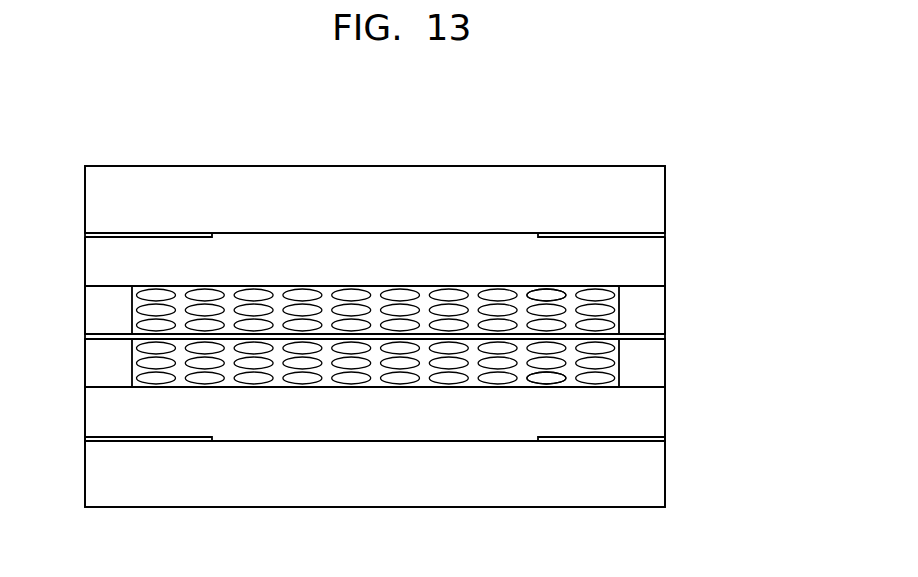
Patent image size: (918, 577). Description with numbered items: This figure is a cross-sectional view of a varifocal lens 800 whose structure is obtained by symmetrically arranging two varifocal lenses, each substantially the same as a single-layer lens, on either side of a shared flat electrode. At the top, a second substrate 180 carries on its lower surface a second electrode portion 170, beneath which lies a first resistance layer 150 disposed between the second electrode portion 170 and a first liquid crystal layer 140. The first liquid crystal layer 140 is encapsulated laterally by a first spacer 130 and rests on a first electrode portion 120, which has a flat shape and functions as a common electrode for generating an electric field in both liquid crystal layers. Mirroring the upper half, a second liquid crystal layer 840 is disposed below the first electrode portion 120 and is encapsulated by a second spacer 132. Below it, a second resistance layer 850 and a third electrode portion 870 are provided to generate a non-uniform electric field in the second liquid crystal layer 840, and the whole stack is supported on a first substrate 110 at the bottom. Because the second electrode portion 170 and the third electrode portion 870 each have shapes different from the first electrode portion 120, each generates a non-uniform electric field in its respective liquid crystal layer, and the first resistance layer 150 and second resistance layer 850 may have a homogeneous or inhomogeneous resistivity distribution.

The varifocal lens 800 is at (684, 150).
The second substrate 180 is at (665, 200).
The second electrode portion 170 is at (665, 236).
The first resistance layer 150 is at (665, 261).
The first spacer 130 is at (665, 309).
The first liquid crystal layer 140 is at (570, 287).
The first electrode portion 120 is at (665, 334).
The second spacer 132 is at (665, 363).
The second liquid crystal layer 840 is at (570, 383).
The second resistance layer 850 is at (665, 412).
The third electrode portion 870 is at (665, 438).
The first substrate 110 is at (665, 473).